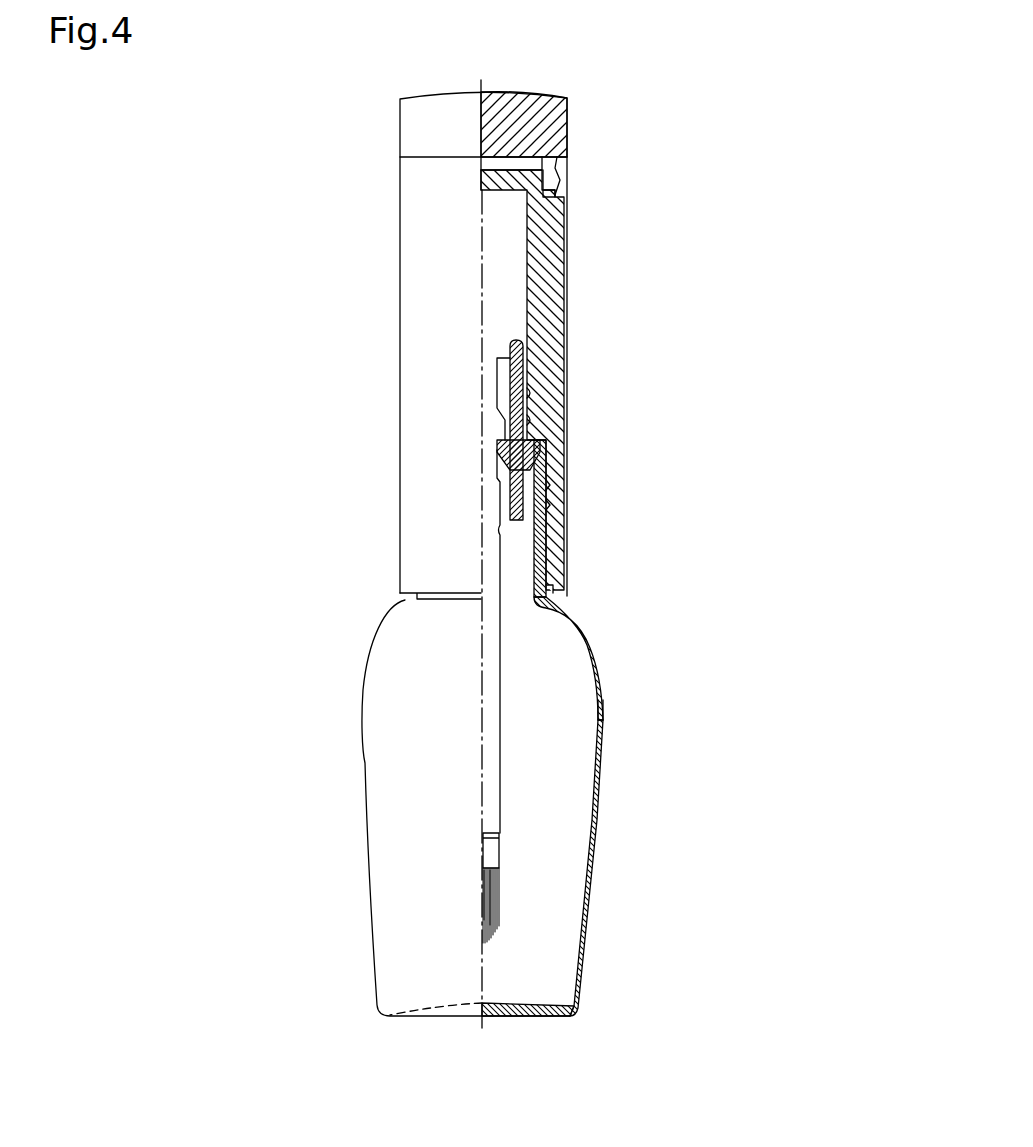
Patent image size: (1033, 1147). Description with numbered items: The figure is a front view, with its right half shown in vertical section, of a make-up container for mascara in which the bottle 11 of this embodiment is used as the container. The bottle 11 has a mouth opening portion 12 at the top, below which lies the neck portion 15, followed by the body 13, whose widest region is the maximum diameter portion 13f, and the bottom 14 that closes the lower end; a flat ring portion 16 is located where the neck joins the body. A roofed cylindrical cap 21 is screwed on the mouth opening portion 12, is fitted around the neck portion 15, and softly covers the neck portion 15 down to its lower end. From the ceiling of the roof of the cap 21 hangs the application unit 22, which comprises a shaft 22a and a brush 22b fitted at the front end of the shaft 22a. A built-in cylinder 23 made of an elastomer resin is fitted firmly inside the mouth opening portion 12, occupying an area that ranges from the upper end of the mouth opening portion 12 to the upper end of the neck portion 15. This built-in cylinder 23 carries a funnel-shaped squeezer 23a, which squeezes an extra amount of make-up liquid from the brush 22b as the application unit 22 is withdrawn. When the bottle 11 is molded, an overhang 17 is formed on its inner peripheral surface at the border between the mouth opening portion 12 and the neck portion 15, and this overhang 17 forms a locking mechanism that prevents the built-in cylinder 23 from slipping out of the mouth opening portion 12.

The bottle 11 is at (628, 636).
The mouth opening portion 12 is at (527, 390).
The body 13 is at (597, 813).
The maximum diameter portion 13f is at (620, 698).
The bottom 14 is at (505, 1013).
The neck portion 15 is at (538, 520).
The flat ring portion 16 is at (570, 593).
The overhang 17 is at (540, 497).
The cap 21 is at (425, 286).
The application unit 22 is at (341, 696).
The shaft 22a is at (492, 687).
The brush 22b is at (488, 893).
The built-in cylinder 23 is at (527, 368).
The squeezer 23a is at (527, 448).